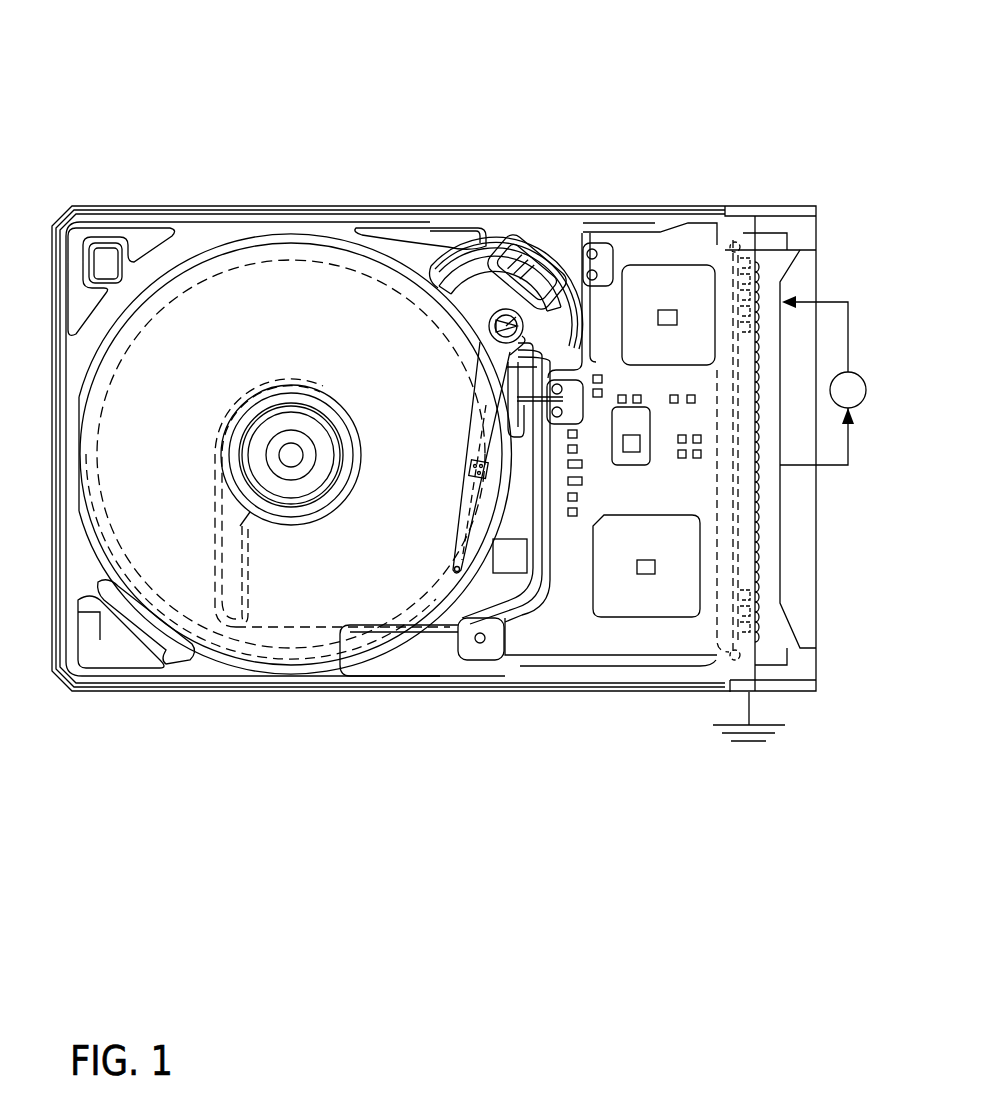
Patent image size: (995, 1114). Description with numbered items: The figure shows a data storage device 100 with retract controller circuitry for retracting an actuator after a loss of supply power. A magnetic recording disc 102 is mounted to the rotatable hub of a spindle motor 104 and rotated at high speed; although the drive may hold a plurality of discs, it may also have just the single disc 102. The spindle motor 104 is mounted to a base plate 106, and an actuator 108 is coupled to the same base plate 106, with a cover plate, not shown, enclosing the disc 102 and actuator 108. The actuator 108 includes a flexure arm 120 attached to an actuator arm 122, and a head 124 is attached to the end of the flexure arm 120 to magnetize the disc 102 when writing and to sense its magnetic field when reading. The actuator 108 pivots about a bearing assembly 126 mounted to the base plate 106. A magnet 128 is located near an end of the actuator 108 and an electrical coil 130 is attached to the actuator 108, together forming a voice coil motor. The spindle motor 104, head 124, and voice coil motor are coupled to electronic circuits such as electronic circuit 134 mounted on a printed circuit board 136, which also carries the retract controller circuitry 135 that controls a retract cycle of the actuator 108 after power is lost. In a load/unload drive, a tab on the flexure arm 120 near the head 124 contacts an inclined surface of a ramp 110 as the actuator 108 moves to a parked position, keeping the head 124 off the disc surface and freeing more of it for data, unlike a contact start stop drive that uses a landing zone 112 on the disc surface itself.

The data storage device 100 is at (746, 64).
The disc 102 is at (350, 577).
The spindle motor 104 is at (251, 396).
The base plate 106 is at (240, 228).
The actuator 108 is at (446, 392).
The ramp 110 is at (507, 574).
The landing zone 112 is at (212, 638).
The flexure arm 120 is at (468, 495).
The actuator arm 122 is at (470, 438).
The head 124 is at (454, 567).
The bearing assembly 126 is at (447, 340).
The magnet 128 is at (526, 275).
The electrical coil 130 is at (544, 270).
The electronic circuit 134 is at (643, 578).
The retract controller circuitry 135 is at (662, 552).
The printed circuit board 136 is at (574, 645).